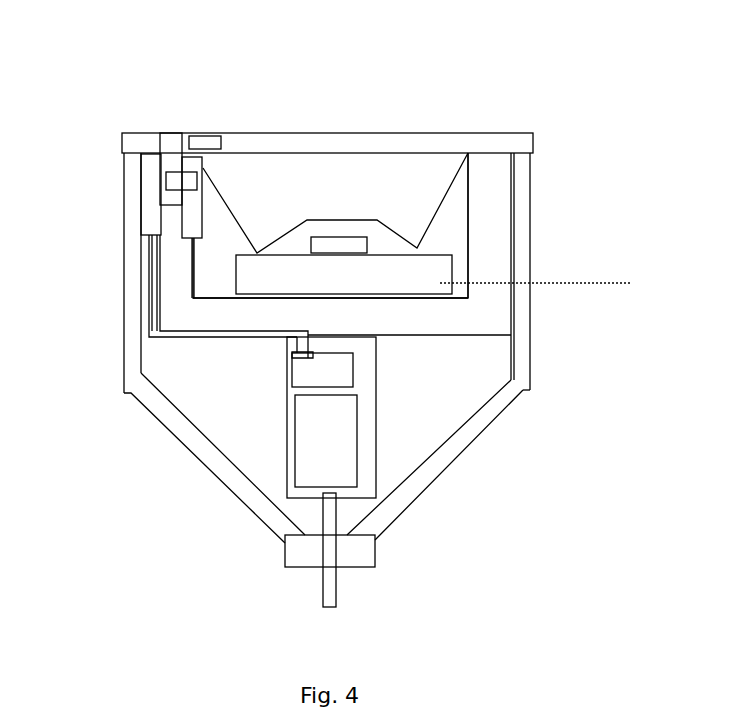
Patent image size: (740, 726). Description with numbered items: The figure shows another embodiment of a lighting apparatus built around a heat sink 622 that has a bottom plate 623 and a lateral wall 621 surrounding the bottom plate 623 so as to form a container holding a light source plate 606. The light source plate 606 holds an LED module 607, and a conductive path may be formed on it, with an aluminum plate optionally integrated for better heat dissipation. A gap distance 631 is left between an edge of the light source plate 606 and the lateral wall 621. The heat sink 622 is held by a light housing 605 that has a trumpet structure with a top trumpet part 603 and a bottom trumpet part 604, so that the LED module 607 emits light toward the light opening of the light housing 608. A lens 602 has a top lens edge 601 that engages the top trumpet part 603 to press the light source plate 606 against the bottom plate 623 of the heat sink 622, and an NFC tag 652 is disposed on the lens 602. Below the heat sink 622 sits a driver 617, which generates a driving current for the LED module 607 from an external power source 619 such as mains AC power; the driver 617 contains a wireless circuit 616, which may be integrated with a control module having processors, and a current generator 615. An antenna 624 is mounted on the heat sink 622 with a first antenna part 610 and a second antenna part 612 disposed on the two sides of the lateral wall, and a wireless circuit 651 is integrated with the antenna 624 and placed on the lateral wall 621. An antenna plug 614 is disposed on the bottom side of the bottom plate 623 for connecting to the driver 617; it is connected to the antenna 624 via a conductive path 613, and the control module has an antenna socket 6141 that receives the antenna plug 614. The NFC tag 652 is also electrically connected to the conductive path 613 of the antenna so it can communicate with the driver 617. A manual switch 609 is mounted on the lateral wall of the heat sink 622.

The top lens edge 601 is at (528, 130).
The lens 602 is at (292, 182).
The top trumpet part 603 is at (525, 208).
The bottom trumpet part 604 is at (452, 453).
The light housing 605 is at (530, 393).
The light source plate 606 is at (559, 298).
The LED module 607 is at (350, 242).
The light housing 608 is at (229, 170).
The manual switch 609 is at (173, 145).
The first antenna part 610 is at (152, 188).
The second antenna part 612 is at (202, 210).
The conductive path 613 is at (157, 314).
The antenna plug 614 is at (303, 343).
The antenna socket 6141 is at (344, 287).
The current generator 615 is at (347, 440).
The wireless circuit 616 is at (305, 372).
The driver 617 is at (295, 423).
The external power source 619 is at (333, 587).
The lateral wall 621 is at (495, 178).
The heat sink 622 is at (497, 318).
The bottom plate 623 is at (435, 327).
The antenna 624 is at (143, 172).
The gap distance 631 is at (210, 285).
The wireless circuit 651 is at (183, 184).
The NFC tag 652 is at (207, 133).